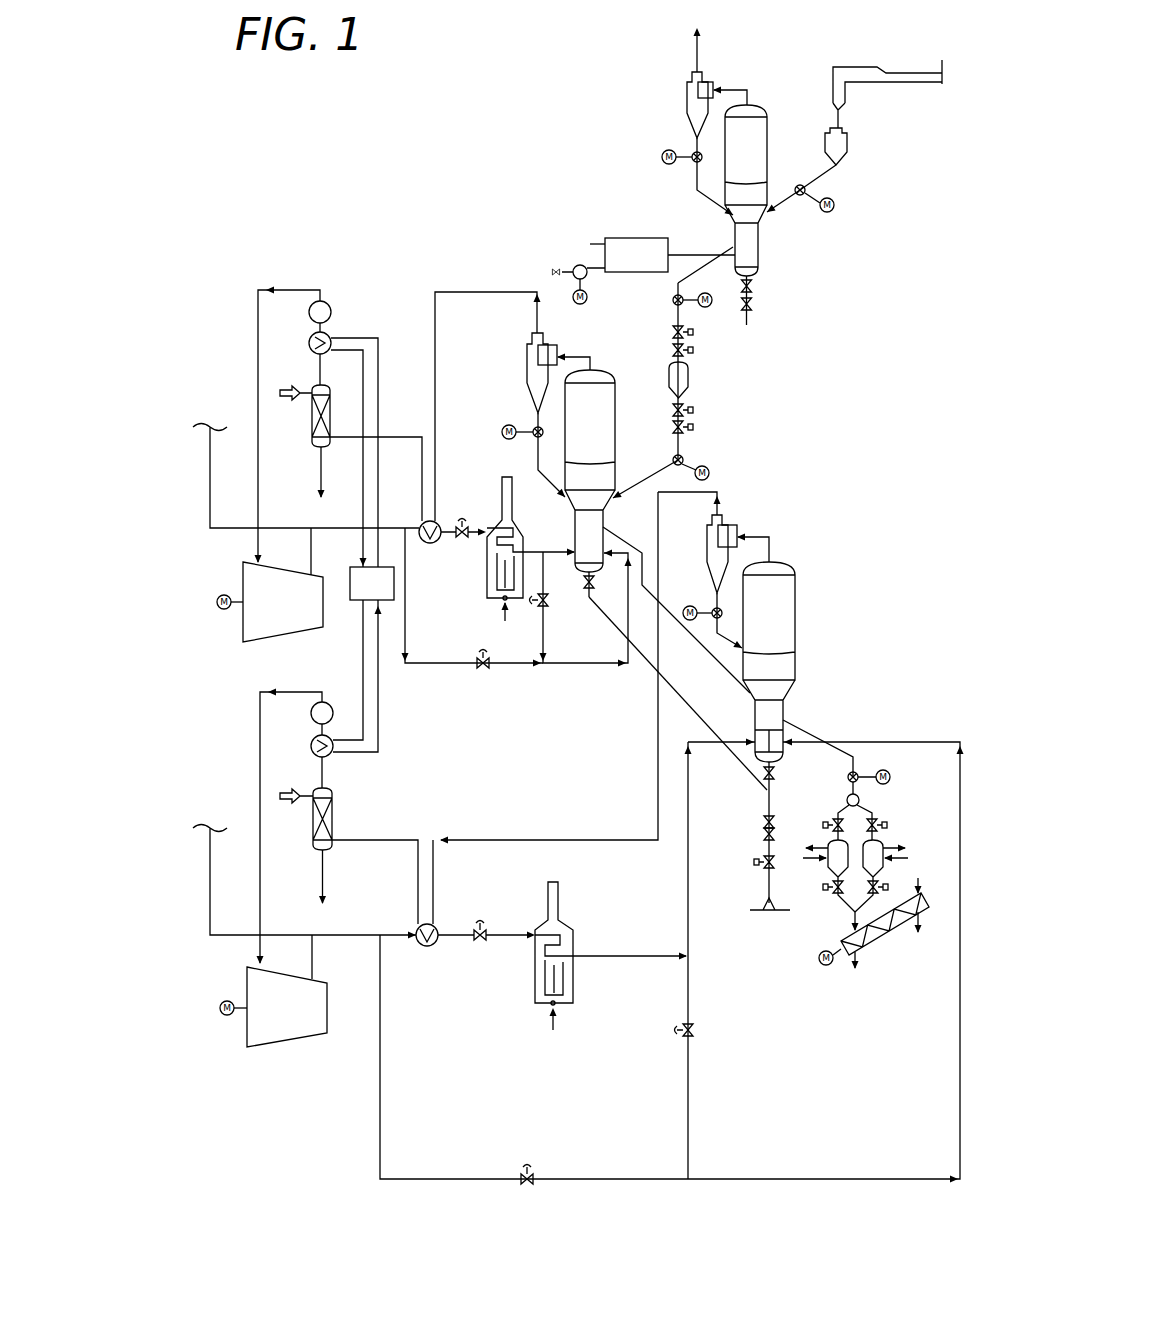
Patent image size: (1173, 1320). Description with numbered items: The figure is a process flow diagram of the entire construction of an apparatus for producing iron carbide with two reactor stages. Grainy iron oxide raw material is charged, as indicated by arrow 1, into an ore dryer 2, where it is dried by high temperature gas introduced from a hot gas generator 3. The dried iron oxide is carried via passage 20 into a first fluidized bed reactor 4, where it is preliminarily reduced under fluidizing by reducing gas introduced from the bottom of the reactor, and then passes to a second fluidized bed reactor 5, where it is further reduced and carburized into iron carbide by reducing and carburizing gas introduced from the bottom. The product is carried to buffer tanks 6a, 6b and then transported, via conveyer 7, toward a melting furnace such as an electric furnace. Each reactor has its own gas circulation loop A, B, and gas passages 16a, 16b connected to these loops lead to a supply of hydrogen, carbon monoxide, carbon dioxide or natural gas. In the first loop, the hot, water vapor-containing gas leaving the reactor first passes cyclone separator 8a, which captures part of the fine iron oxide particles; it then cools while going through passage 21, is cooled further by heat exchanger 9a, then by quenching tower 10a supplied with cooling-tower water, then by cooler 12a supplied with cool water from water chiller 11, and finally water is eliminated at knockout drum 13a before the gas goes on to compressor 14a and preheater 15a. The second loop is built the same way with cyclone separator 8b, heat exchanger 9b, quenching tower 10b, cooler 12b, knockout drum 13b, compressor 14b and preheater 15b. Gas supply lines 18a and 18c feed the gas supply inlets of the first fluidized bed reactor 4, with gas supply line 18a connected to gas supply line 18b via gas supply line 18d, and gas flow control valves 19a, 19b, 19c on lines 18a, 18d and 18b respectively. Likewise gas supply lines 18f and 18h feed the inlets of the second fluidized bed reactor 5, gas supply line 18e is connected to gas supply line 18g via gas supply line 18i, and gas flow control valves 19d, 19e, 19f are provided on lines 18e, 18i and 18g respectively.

The arrow indicating charging of raw materials 1 is at (892, 55).
The ore dryer 2 is at (764, 150).
The hot gas generator 3 is at (630, 246).
The first fluidized bed reactor 4 is at (602, 437).
The second fluidized bed reactor 5 is at (792, 607).
The buffer tank 6a is at (832, 872).
The buffer tank 6b is at (870, 872).
The conveyer 7 is at (880, 938).
The cyclone separator 8a is at (531, 333).
The cyclone separator 8b is at (721, 566).
The heat exchanger 9a is at (424, 544).
The heat exchanger 9b is at (427, 947).
The quenching tower 10a is at (331, 417).
The quenching tower 10b is at (333, 817).
The water chiller 11 is at (358, 596).
The cooler 12a is at (308, 350).
The cooler 12b is at (310, 753).
The knockout drum 13a is at (308, 316).
The knockout drum 13b is at (310, 720).
The compressor 14a is at (305, 617).
The compressor 14b is at (305, 1023).
The preheater 15a is at (521, 600).
The preheater 15b is at (540, 1008).
The gas passage 16a is at (207, 496).
The gas passage 16b is at (207, 910).
The gas supply line 18a is at (537, 551).
The gas supply line 18b is at (433, 664).
The gas supply line 18c is at (600, 668).
The gas supply line 18d is at (552, 568).
The gas supply line 18e is at (621, 955).
The gas supply line 18f is at (687, 879).
The gas supply line 18g is at (463, 1177).
The gas supply line 18h is at (790, 1177).
The gas supply line 18i is at (688, 1116).
The gas flow control valve 19a is at (462, 519).
The gas flow control valve 19b is at (550, 603).
The gas flow control valve 19c is at (483, 670).
The gas flow control valve 19d is at (481, 920).
The gas flow control valve 19e is at (676, 1030).
The gas flow control valve 19f is at (523, 1166).
The passage 20 is at (678, 318).
The passage 21 is at (435, 370).
The gas circulation loop A is at (283, 280).
The gas circulation loop B is at (363, 952).